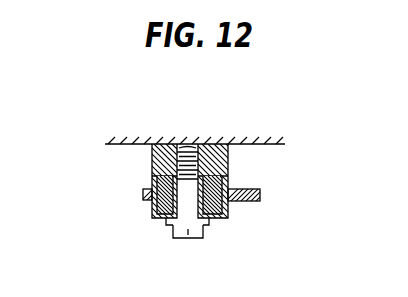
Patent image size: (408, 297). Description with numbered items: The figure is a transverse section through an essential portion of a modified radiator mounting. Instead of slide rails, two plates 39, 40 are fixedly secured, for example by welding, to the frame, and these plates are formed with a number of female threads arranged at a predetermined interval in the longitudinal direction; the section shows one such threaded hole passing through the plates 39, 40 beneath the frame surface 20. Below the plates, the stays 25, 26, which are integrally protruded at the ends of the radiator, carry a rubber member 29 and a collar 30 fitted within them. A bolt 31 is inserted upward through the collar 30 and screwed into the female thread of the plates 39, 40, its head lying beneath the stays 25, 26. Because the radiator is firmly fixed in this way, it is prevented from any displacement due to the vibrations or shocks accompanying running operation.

The support surface / frame 20 is at (245, 143).
The plate 39 is at (162, 158).
The plate 40 is at (193, 189).
The rubber member 29 is at (151, 203).
The stay 25 is at (235, 190).
The stay 26 is at (260, 193).
The collar 30 is at (157, 222).
The bolt 31 is at (190, 238).